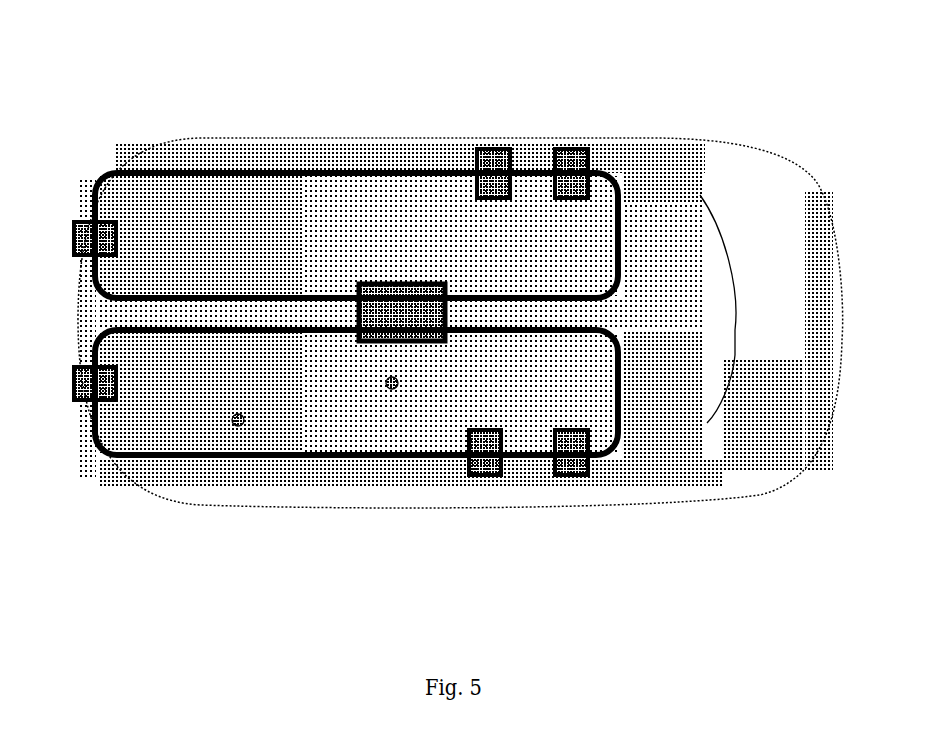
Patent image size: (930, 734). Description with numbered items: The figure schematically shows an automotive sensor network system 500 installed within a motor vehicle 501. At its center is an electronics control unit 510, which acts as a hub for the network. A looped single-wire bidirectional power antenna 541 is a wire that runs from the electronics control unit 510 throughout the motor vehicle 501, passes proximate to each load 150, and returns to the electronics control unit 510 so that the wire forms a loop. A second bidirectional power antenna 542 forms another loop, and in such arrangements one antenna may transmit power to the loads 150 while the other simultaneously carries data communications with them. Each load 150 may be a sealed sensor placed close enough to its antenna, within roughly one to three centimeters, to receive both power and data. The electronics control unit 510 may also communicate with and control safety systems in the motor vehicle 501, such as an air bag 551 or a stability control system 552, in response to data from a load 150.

The automotive sensor network system 500 is at (182, 72).
The motor vehicle 501 is at (781, 196).
The electronics control unit 510 is at (433, 300).
The looped single-wire bidirectional power antenna 541 is at (257, 170).
The bidirectional power antenna 542 is at (293, 452).
The air bag 551 is at (390, 385).
The stability control system 552 is at (237, 423).
The sealed sensor 150 is at (72, 240).